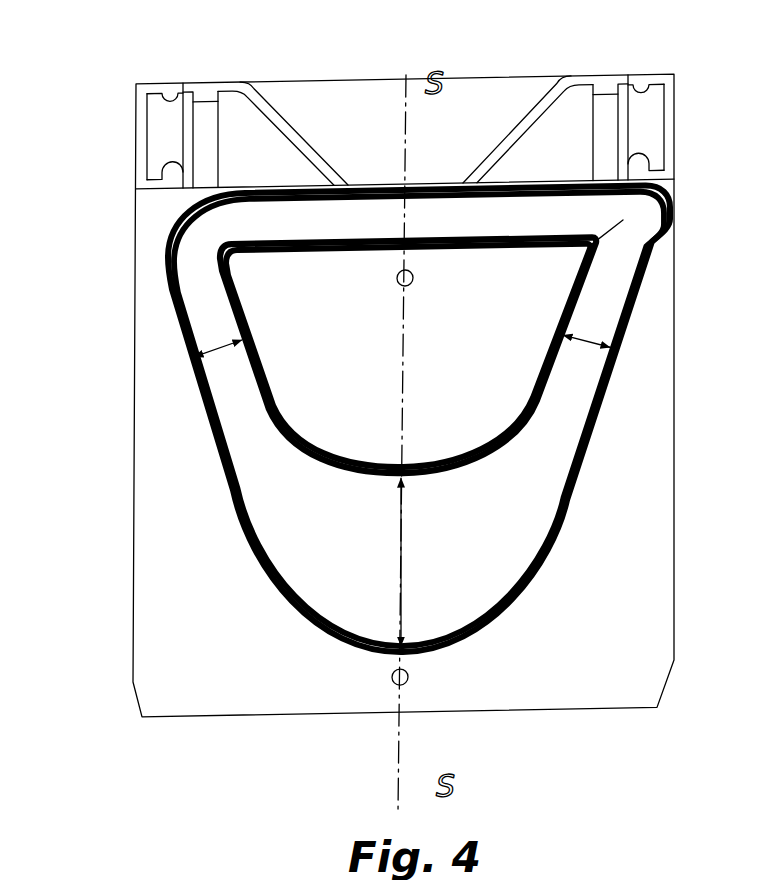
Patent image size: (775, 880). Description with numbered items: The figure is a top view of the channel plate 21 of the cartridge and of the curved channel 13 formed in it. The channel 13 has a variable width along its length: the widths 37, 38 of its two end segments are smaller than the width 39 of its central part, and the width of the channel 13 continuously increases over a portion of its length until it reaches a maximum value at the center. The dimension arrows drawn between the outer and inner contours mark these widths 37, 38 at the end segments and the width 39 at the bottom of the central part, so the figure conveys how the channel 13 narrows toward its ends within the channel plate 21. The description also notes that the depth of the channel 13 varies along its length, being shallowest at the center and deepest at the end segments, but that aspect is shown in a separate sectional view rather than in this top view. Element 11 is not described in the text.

The loading opening edge 11 is at (427, 218).
The channel 13 is at (543, 467).
The channel plate 21 is at (675, 151).
The width of end segment of channel 37 is at (194, 345).
The width of end segment of channel 38 is at (592, 340).
The width of central part of channel 39 is at (401, 550).